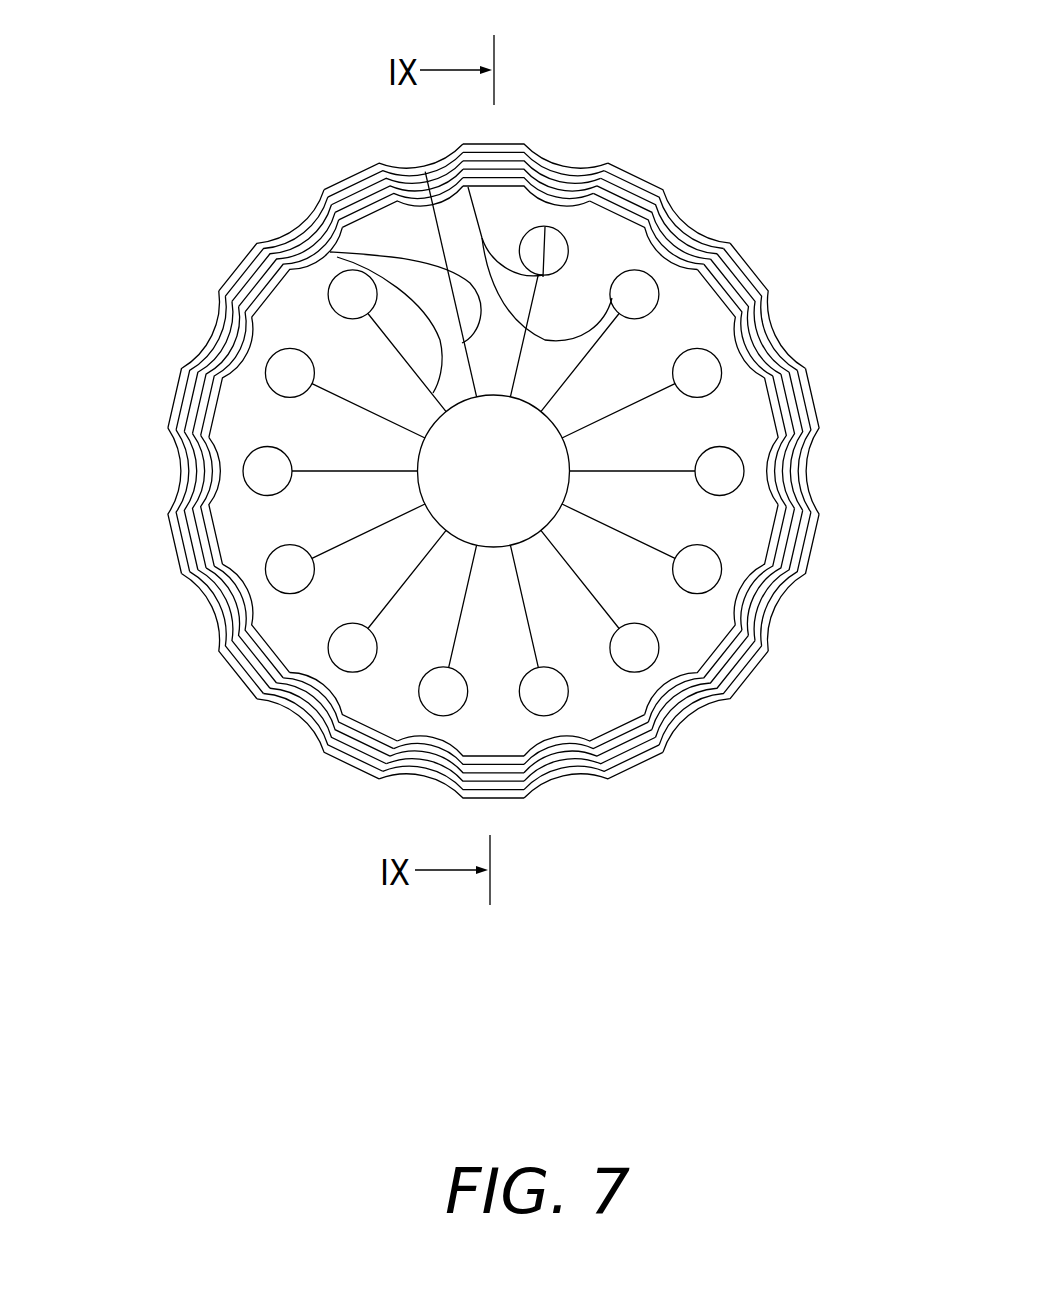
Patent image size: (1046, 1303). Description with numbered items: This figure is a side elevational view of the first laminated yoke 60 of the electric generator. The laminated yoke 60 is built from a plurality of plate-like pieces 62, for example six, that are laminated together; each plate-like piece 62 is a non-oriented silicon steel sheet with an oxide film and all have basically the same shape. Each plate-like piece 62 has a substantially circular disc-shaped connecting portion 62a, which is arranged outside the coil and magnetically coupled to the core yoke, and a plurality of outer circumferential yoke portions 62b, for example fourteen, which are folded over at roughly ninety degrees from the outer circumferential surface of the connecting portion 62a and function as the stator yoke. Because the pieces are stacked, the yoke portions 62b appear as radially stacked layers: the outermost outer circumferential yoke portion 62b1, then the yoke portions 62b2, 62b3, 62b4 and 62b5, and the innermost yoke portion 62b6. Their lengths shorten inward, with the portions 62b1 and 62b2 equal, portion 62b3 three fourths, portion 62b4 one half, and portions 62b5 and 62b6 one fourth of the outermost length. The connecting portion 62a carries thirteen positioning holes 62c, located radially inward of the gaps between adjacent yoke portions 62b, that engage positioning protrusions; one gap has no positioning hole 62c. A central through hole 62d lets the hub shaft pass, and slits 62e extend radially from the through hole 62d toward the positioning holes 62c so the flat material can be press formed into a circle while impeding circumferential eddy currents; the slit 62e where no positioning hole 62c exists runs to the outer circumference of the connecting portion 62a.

The laminated yoke 60 is at (340, 166).
The plate-like piece 62 is at (660, 180).
The connecting portion 62a is at (290, 313).
The outer circumferential yoke portions 62b is at (905, 978).
The outermost outer circumferential yoke portion 62b1 is at (178, 555).
The outer circumferential yoke portion 62b2 is at (255, 678).
The outer circumferential yoke portion 62b3 is at (504, 781).
The outer circumferential yoke portion 62b4 is at (626, 745).
The outer circumferential yoke portion 62b5 is at (724, 655).
The innermost outer circumferential yoke portion 62b6 is at (771, 535).
The positioning hole 62c is at (459, 162).
The through hole 62d is at (417, 458).
The slit 62e is at (330, 252).